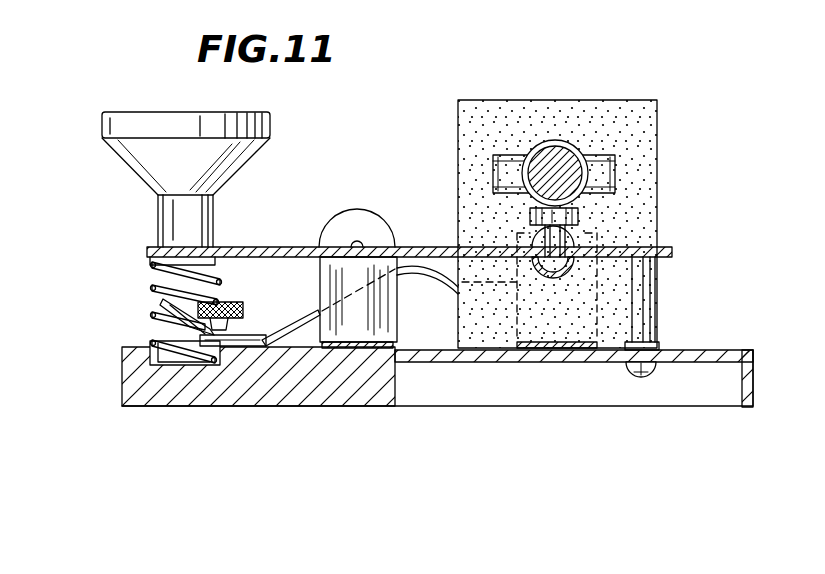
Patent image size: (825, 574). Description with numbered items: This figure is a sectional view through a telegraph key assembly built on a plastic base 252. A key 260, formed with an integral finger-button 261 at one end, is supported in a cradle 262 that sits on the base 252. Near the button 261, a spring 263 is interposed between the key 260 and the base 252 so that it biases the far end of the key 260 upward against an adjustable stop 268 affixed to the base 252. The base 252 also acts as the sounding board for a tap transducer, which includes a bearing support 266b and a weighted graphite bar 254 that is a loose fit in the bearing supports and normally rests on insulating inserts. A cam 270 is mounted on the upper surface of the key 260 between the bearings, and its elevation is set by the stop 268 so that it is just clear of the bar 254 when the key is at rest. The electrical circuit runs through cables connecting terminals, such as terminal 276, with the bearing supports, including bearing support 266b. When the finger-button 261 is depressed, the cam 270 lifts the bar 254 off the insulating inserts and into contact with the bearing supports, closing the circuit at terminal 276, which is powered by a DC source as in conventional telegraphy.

The plastic base 252 is at (757, 345).
The weighted graphite bar 254 is at (575, 160).
The key 260 is at (422, 247).
The finger-button 261 is at (215, 166).
The cradle 262 is at (320, 293).
The spring 263 is at (152, 292).
The bearing support 266b is at (632, 88).
The adjustable stop 268 is at (640, 291).
The cam 270 is at (580, 216).
The terminal 276 is at (250, 287).